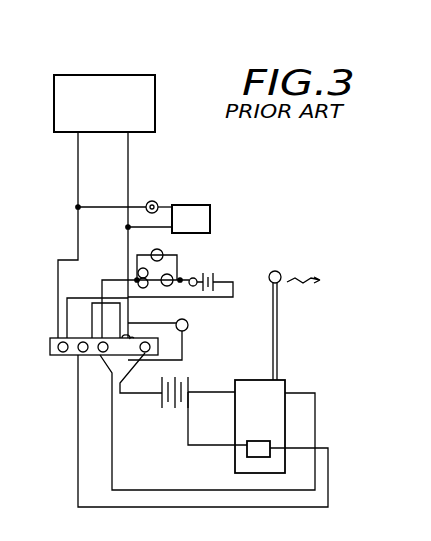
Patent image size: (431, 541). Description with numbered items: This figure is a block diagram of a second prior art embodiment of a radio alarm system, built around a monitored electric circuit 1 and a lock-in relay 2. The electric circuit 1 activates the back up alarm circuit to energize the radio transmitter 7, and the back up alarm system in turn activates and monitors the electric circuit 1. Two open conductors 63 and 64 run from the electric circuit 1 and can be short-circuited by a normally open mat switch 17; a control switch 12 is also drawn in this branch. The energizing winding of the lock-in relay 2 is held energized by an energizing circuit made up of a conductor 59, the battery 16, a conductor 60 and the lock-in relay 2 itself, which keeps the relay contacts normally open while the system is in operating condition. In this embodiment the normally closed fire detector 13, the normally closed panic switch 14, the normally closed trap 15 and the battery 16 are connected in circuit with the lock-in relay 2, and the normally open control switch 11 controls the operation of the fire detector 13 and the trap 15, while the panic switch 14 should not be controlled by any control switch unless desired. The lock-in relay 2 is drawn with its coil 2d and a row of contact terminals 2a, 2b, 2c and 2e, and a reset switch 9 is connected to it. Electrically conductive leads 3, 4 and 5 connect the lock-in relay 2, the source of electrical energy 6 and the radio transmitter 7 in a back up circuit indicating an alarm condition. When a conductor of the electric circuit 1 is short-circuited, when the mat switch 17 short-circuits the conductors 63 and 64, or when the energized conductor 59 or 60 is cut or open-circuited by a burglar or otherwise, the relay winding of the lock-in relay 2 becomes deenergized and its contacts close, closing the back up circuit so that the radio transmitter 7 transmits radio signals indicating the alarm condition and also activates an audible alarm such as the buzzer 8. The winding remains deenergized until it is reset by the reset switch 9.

The electric circuit 1 is at (160, 62).
The lock-in relay 2 is at (117, 395).
The relay contact 2a is at (57, 357).
The relay contact 2b is at (77, 358).
The relay contact 2c is at (100, 358).
The relay coil 2d is at (113, 320).
The relay contact 2e is at (159, 350).
The electrically conductive lead 3 is at (136, 392).
The electrically conductive lead 4 is at (217, 410).
The electrically conductive lead 5 is at (242, 491).
The source of electrical energy 6 is at (173, 376).
The radio transmitter 7 is at (282, 380).
The buzzer 8 is at (241, 458).
The reset switch 9 is at (187, 329).
The control switch 11 is at (161, 251).
The control switch 12 is at (153, 200).
The fire detector 13 is at (166, 286).
The panic switch 14 is at (194, 278).
The trap 15 is at (137, 275).
The battery 16 is at (218, 274).
The mat switch 17 is at (184, 209).
The conductor 59 is at (102, 288).
The conductor 60 is at (97, 318).
The open conductor 63 is at (128, 166).
The open conductor 64 is at (78, 188).